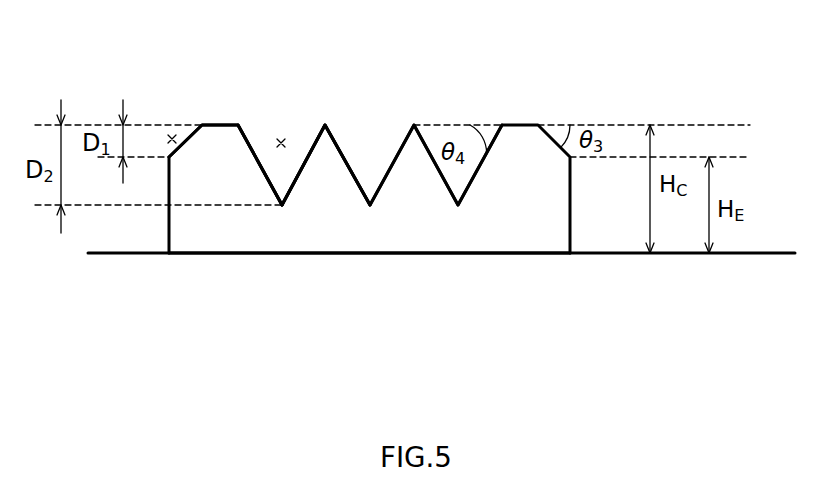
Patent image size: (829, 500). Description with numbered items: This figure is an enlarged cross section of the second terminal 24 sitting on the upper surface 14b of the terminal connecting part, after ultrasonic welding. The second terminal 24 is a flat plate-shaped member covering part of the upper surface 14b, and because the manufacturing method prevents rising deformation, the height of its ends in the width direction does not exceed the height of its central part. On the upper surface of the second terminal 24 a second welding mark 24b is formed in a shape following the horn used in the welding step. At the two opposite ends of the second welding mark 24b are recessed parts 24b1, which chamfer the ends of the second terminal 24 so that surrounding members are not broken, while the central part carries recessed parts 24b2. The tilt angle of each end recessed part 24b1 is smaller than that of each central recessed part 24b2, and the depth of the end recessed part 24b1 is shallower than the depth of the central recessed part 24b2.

The upper surface 14b is at (583, 253).
The second terminal 24 is at (338, 242).
The second welding mark 24b is at (416, 116).
The recessed part 24b1 is at (172, 130).
The recessed part 24b2 is at (281, 134).